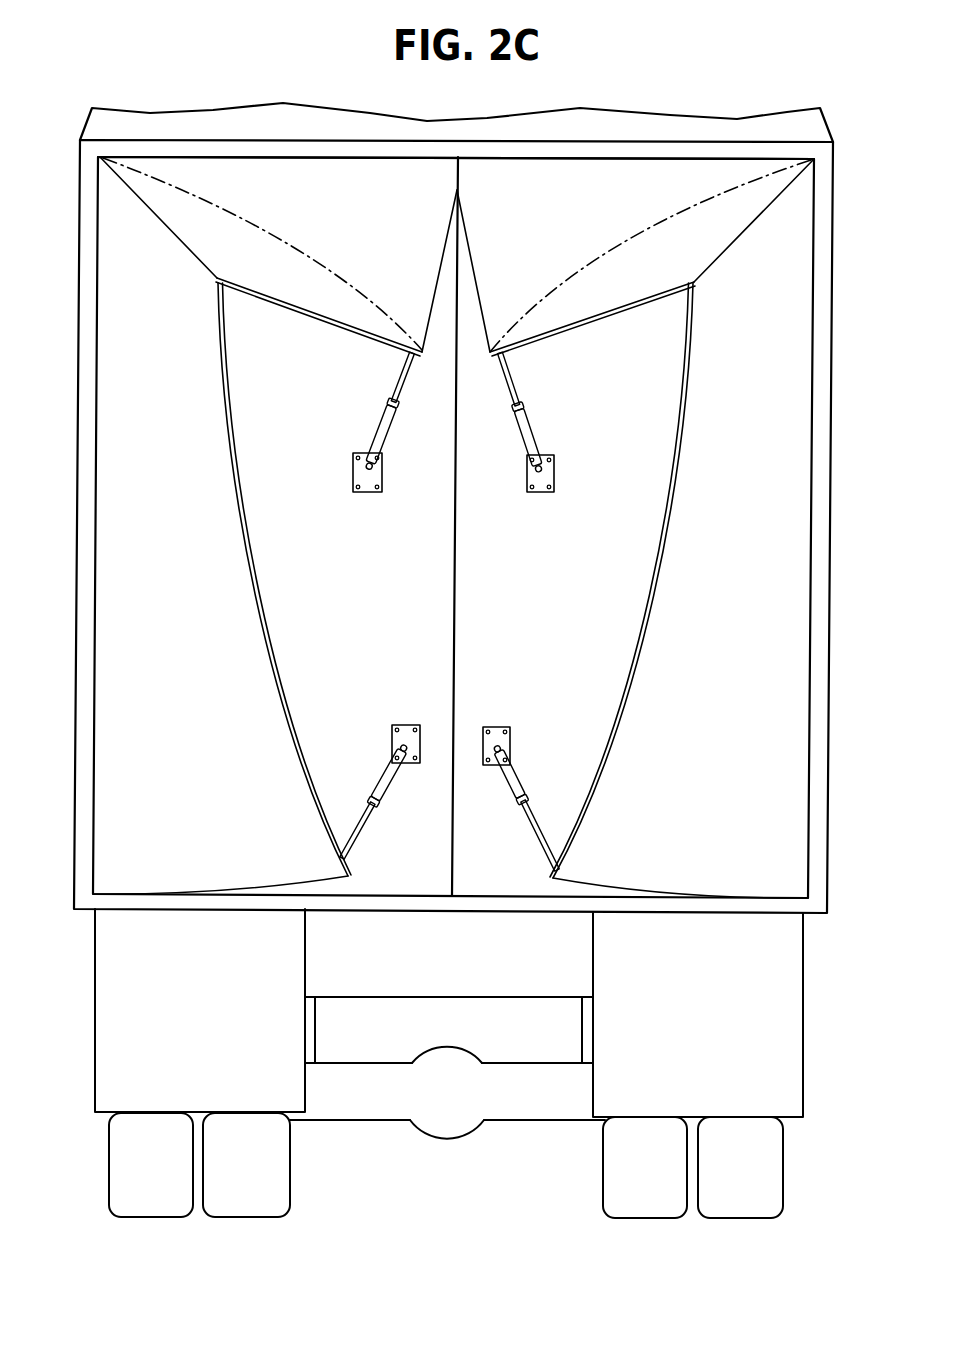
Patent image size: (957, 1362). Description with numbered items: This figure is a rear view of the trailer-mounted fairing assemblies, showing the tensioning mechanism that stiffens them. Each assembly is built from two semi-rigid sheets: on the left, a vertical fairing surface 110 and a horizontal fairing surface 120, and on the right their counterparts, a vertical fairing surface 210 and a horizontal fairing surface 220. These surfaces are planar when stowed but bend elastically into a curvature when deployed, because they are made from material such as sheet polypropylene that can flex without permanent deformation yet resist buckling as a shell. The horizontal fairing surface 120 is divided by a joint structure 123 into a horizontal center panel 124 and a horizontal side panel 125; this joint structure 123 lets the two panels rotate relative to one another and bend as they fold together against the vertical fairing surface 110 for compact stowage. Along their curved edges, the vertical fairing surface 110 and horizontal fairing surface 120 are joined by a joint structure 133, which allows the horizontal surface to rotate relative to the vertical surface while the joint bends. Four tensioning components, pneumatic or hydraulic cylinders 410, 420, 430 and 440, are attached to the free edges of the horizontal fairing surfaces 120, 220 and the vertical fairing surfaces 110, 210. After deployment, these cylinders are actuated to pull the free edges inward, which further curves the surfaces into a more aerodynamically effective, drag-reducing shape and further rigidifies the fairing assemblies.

The vertical fairing surface 110 is at (182, 521).
The horizontal fairing surface 120 is at (273, 264).
The joint structure 123 is at (175, 178).
The horizontal center panel 124 is at (310, 177).
The horizontal side panel 125 is at (158, 236).
The joint structure 133 is at (195, 258).
The vertical fairing surface 210 is at (773, 531).
The horizontal fairing surface 220 is at (580, 237).
The pneumatic or hydraulic cylinder 410 is at (383, 447).
The pneumatic or hydraulic cylinder 420 is at (527, 447).
The pneumatic or hydraulic cylinder 430 is at (388, 790).
The pneumatic or hydraulic cylinder 440 is at (512, 797).